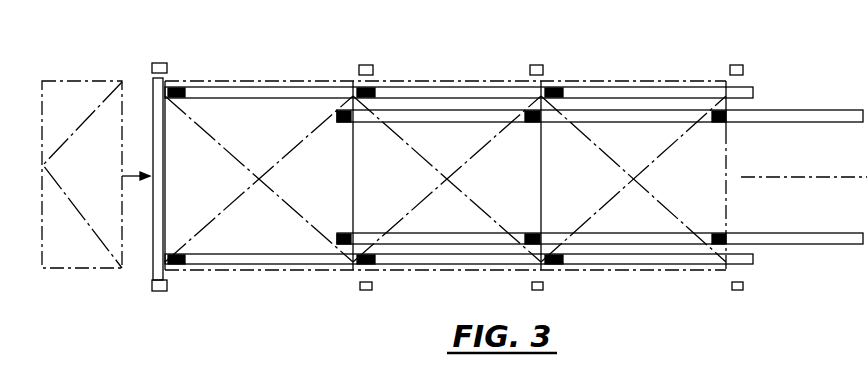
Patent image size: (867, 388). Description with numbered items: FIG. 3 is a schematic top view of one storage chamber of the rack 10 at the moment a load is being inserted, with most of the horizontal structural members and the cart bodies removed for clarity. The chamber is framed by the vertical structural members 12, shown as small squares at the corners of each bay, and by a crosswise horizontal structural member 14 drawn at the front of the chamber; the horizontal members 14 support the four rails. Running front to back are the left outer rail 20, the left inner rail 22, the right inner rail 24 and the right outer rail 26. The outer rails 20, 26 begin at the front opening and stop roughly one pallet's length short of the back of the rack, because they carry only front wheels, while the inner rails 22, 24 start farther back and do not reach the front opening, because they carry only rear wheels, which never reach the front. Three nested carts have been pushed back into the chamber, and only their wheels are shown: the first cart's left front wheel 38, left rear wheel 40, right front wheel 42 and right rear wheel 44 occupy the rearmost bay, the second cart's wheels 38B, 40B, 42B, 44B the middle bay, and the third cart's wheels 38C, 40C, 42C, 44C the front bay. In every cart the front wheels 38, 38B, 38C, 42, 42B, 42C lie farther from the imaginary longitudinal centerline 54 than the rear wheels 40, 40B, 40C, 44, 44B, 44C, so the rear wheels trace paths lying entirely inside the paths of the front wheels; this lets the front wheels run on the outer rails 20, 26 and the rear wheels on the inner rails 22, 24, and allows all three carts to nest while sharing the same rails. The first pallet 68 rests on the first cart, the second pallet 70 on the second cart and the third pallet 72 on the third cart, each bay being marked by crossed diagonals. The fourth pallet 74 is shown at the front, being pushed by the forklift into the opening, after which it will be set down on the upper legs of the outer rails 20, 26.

The rack 10 is at (470, 62).
The vertical structural members 12 is at (161, 63).
The crosswise horizontal structural members 14 is at (153, 265).
The left outer rail 20 is at (266, 86).
The left inner rail 22 is at (840, 110).
The right inner rail 24 is at (806, 233).
The right outer rail 26 is at (278, 264).
The left front wheel 38 is at (563, 90).
The left front wheel of second cart 38B is at (375, 90).
The left front wheel of third cart 38C is at (185, 90).
The left rear wheel 40 is at (718, 122).
The left rear wheel of second cart 40B is at (533, 122).
The left rear wheel of third cart 40C is at (343, 122).
The right front wheel 42 is at (565, 264).
The right front wheel of second cart 42B is at (375, 264).
The right front wheel of third cart 42C is at (185, 264).
The right rear wheel 44 is at (718, 233).
The right rear wheel of second cart 44B is at (533, 233).
The right rear wheel of third cart 44C is at (343, 233).
The imaginary longitudinal centerline 54 is at (814, 177).
The pallet 68 is at (652, 155).
The second pallet 70 is at (462, 156).
The third pallet 72 is at (270, 137).
The fourth pallet 74 is at (104, 75).